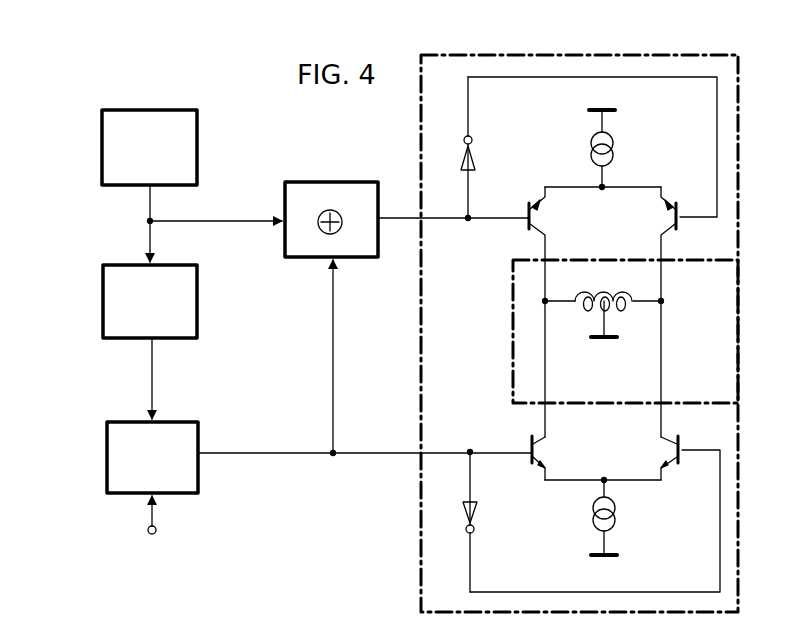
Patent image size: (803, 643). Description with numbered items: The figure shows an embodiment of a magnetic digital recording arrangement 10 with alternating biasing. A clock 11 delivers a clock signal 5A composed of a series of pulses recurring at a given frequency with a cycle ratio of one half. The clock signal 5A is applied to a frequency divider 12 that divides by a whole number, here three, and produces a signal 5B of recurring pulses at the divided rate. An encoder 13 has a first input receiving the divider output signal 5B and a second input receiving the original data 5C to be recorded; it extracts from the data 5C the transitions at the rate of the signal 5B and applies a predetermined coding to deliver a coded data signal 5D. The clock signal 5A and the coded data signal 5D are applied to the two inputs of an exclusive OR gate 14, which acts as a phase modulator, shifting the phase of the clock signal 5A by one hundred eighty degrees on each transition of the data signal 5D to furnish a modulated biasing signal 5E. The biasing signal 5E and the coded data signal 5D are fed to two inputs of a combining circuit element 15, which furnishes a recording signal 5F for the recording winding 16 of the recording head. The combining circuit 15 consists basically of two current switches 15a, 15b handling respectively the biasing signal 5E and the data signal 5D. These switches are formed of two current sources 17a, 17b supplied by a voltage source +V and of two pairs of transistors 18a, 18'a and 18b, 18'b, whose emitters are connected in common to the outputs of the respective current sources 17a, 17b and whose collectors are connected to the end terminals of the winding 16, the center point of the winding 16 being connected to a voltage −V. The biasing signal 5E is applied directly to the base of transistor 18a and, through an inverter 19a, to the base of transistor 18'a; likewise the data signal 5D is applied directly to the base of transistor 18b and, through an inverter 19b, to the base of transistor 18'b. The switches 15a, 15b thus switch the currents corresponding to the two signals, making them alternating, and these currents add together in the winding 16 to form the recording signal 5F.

The digital recording arrangement 10 is at (248, 575).
The clock 11 is at (102, 130).
The frequency divider 12 is at (103, 288).
The encoder 13 is at (107, 453).
The exclusive OR gate 14 is at (360, 184).
The combining circuit element 15 is at (425, 346).
The current switch 15a is at (454, 108).
The current switch 15b is at (455, 559).
The recording winding 16 is at (622, 305).
The current source 17a is at (634, 158).
The current source 17b is at (636, 522).
The transistor 18a is at (526, 212).
The transistor 18'a is at (684, 306).
The transistor 18b is at (526, 462).
The transistor 18'b is at (688, 466).
The inverter 19a is at (471, 142).
The inverter 19b is at (472, 509).
The clock signal 5A is at (199, 223).
The divider output signal 5B is at (134, 378).
The original data 5C is at (149, 527).
The coded data signal 5D is at (364, 358).
The modulated biasing signal 5E is at (453, 207).
The recording signal 5F is at (606, 277).